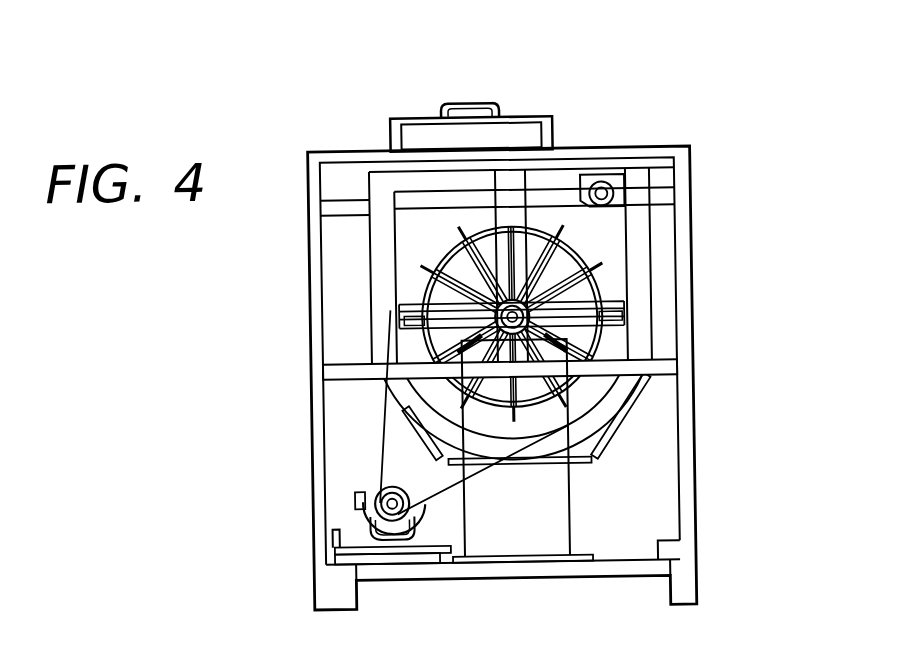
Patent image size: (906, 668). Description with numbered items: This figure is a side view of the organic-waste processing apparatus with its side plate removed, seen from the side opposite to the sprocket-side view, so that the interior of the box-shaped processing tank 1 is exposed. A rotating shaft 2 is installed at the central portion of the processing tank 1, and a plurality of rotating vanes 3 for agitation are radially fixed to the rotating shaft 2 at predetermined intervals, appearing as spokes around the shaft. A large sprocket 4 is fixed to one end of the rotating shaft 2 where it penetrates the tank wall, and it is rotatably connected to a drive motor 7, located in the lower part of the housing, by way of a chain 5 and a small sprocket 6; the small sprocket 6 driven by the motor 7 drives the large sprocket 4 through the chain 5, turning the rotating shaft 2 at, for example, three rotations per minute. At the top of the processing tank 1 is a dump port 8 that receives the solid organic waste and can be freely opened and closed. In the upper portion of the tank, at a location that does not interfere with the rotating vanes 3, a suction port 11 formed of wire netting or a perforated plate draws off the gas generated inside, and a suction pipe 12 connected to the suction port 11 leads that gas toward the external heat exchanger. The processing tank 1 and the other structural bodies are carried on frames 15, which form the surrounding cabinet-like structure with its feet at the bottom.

The processing tank 1 is at (643, 285).
The rotating shaft 2 is at (472, 281).
The rotating vanes 3 is at (548, 392).
The large sprocket 4 is at (398, 329).
The chain 5 is at (506, 455).
The small sprocket 6 is at (377, 490).
The drive motor 7 is at (420, 580).
The dump port 8 is at (533, 108).
The suction port 11 is at (628, 213).
The suction pipe 12 is at (607, 183).
The frames 15 is at (695, 490).